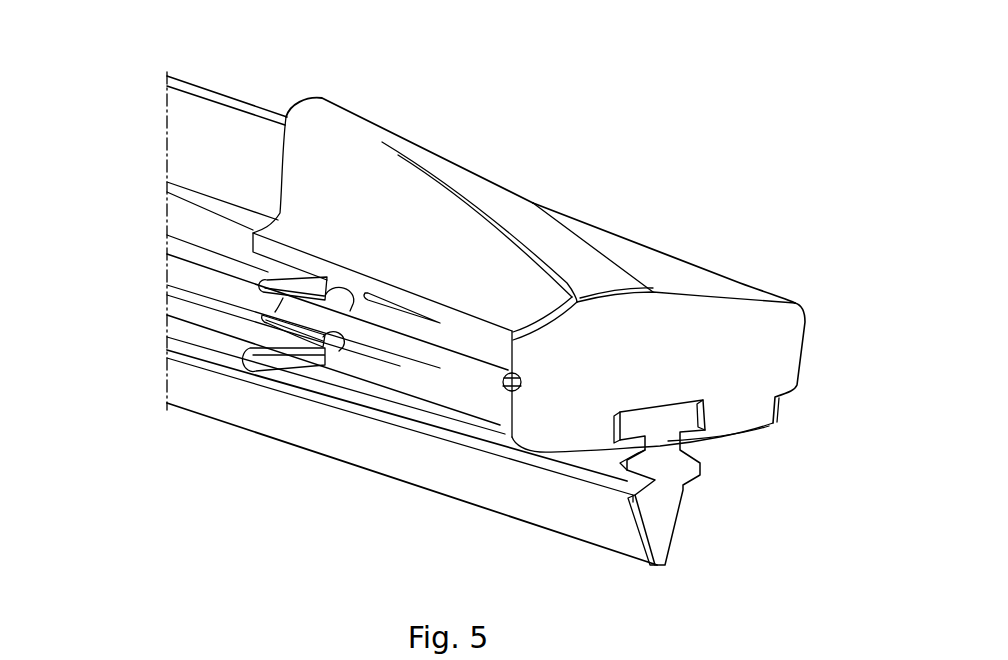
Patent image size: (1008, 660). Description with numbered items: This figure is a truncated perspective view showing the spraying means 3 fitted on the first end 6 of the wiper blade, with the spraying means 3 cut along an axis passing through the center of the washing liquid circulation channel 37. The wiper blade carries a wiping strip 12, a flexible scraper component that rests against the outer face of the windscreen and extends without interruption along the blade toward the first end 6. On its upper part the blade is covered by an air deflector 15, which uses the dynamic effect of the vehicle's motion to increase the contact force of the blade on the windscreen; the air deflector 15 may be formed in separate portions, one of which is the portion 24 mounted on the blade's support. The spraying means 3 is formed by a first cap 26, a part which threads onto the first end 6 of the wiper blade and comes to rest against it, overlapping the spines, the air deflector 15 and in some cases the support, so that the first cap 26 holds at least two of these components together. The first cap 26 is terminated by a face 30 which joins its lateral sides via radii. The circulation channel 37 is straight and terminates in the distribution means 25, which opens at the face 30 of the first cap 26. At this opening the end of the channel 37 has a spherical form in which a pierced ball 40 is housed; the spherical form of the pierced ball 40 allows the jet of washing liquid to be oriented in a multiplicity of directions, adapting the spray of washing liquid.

The spraying means 3 is at (737, 184).
The first end 6 is at (326, 480).
The wiping strip 12 is at (685, 509).
The air deflector 15 is at (233, 96).
The portion of the air deflector 24 is at (192, 142).
The distribution means 25 is at (500, 398).
The first cap 26 is at (744, 281).
The face 30 is at (728, 355).
The washing liquid circulation channel 37 is at (443, 360).
The pierced ball 40 is at (523, 390).